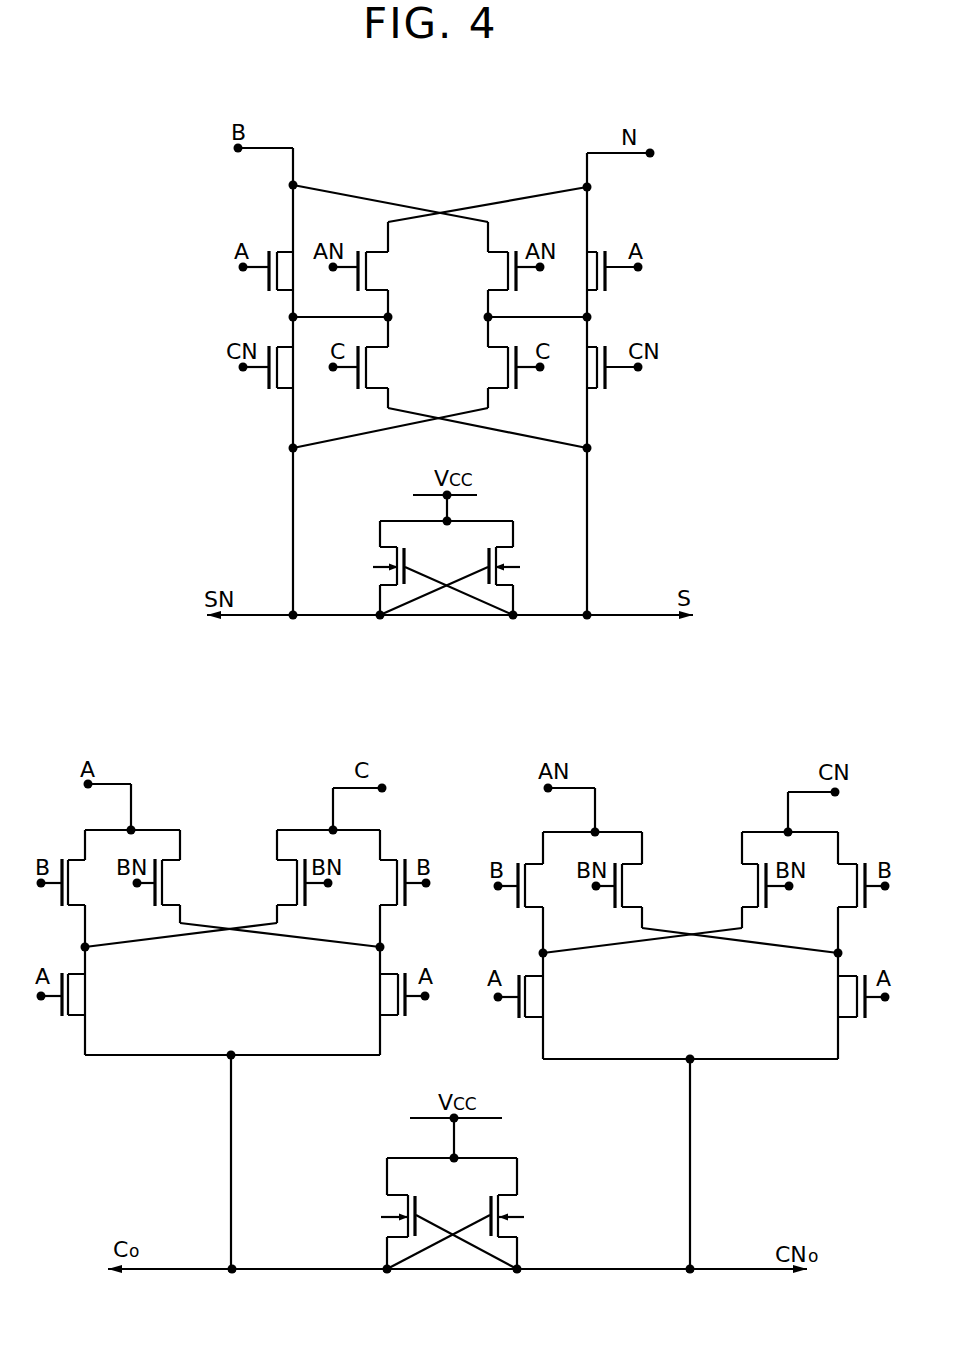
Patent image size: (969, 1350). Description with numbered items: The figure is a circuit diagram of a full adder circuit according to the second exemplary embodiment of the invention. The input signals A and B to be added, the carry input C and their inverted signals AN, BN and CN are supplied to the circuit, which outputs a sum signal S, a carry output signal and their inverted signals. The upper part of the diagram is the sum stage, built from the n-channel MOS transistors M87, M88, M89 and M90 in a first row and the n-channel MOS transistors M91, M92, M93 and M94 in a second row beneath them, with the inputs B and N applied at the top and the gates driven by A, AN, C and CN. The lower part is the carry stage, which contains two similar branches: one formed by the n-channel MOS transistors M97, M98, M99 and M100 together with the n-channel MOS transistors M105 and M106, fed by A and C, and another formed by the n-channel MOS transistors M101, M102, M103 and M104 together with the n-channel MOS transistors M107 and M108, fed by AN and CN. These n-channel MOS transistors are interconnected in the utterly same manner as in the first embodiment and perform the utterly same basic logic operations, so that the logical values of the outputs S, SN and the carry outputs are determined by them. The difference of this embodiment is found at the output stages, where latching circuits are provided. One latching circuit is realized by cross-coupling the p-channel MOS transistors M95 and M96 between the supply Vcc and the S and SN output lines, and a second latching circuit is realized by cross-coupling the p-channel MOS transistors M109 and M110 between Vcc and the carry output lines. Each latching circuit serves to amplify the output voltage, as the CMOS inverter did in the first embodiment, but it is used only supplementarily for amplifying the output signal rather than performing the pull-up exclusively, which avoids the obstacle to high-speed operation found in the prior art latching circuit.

The n-channel MOS transistor M87 is at (251, 277).
The n-channel MOS transistor M88 is at (376, 271).
The n-channel MOS transistor M89 is at (501, 271).
The n-channel MOS transistor M90 is at (627, 277).
The n-channel MOS transistor M91 is at (251, 374).
The n-channel MOS transistor M92 is at (376, 367).
The n-channel MOS transistor M93 is at (496, 367).
The n-channel MOS transistor M94 is at (627, 374).
The p-channel MOS transistor M95 is at (363, 566).
The p-channel MOS transistor M96 is at (531, 566).
The n-channel MOS transistor M97 is at (79, 882).
The n-channel MOS transistor M98 is at (174, 882).
The n-channel MOS transistor M99 is at (286, 882).
The n-channel MOS transistor M100 is at (384, 884).
The n-channel MOS transistor M101 is at (544, 885).
The n-channel MOS transistor M102 is at (642, 885).
The n-channel MOS transistor M103 is at (743, 885).
The n-channel MOS transistor M104 is at (844, 887).
The n-channel MOS transistor M105 is at (88, 994).
The n-channel MOS transistor M106 is at (377, 994).
The n-channel MOS transistor M107 is at (545, 996).
The n-channel MOS transistor M108 is at (843, 996).
The p-channel MOS transistor M109 is at (360, 1216).
The p-channel MOS transistor M110 is at (545, 1216).